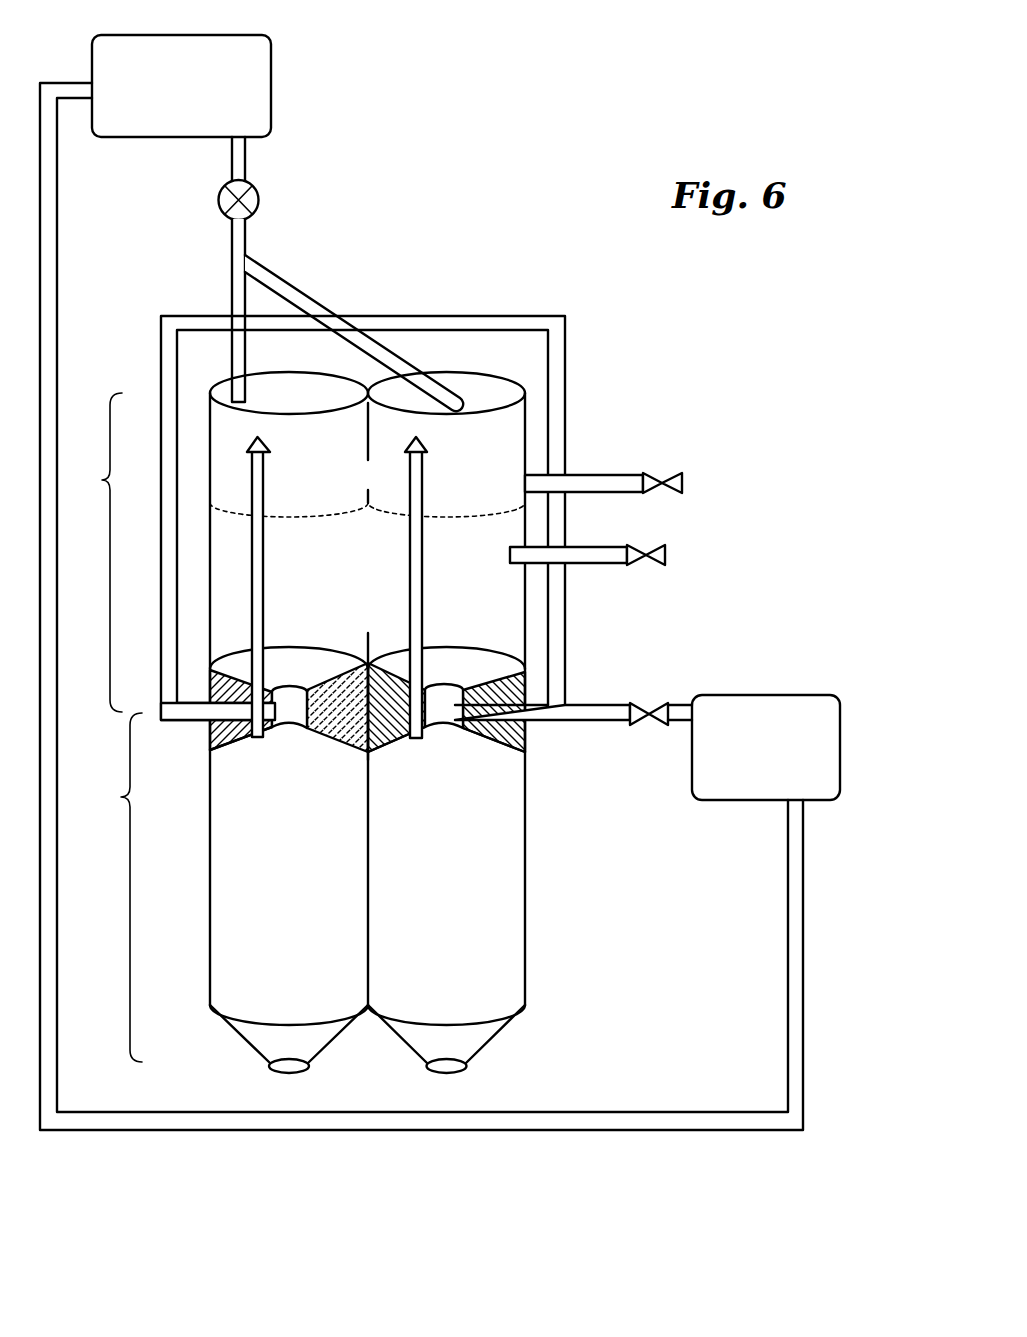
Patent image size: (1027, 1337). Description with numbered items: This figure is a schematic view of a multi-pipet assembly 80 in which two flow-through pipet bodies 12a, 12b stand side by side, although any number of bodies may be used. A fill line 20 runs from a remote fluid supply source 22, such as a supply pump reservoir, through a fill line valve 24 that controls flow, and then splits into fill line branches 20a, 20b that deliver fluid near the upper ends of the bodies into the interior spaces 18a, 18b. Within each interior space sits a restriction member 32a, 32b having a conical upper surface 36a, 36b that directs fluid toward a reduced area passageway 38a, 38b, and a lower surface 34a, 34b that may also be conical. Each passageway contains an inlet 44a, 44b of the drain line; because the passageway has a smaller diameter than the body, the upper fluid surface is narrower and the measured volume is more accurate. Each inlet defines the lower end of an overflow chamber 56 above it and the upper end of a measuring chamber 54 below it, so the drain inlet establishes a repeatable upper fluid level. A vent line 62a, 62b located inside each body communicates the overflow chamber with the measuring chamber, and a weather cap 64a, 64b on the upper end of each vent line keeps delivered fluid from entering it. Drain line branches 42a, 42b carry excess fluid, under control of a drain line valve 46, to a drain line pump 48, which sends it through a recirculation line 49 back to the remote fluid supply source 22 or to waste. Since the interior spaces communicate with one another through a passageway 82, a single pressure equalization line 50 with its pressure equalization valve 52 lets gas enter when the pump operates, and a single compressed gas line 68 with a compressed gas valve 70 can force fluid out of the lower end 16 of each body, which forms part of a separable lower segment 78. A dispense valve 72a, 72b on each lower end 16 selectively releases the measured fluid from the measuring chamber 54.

The remote fluid supply source 22 is at (166, 106).
The fill line 20 is at (240, 170).
The fill line valve 24 is at (250, 203).
The fill line branch 20a is at (238, 288).
The fill line branch 20b is at (278, 285).
The multi-pipet assembly 80 is at (480, 228).
The passageway 82 is at (375, 488).
The drain line branch 42a is at (532, 318).
The drain line branch 42b is at (580, 722).
The pipet body 12a is at (205, 930).
The pipet body 12b is at (525, 940).
The interior space 18a is at (270, 832).
The interior space 18b is at (496, 847).
The lower end 16 is at (218, 1028).
The dispense valve 72a is at (270, 1073).
The dispense valve 72b is at (460, 1075).
The lower segment 78 is at (533, 992).
The upper surface 36a is at (224, 672).
The upper surface 36b is at (387, 673).
The reduced area passageway 38a is at (302, 687).
The reduced area passageway 38b is at (458, 685).
The inlet 44a is at (278, 714).
The inlet 44b is at (457, 728).
The restriction member 32a is at (215, 728).
The restriction member 32b is at (393, 748).
The lower surface 34a is at (228, 748).
The lower surface 34b is at (377, 752).
The vent line 62a is at (266, 498).
The vent line 62b is at (424, 498).
The weather cap 64a is at (270, 443).
The weather cap 64b is at (427, 443).
The pressure equalization line 50 is at (602, 477).
The pressure equalization valve 52 is at (663, 480).
The compressed gas line 68 is at (588, 563).
The compressed gas valve 70 is at (660, 548).
The drain line valve 46 is at (648, 712).
The drain line pump 48 is at (746, 759).
The recirculation line 49 is at (497, 1125).
The overflow chamber 56 is at (93, 552).
The measuring chamber 54 is at (113, 887).